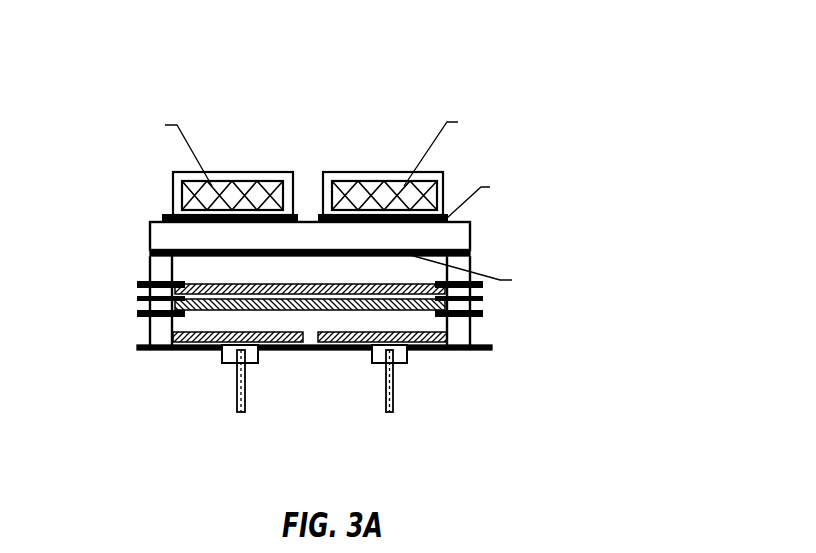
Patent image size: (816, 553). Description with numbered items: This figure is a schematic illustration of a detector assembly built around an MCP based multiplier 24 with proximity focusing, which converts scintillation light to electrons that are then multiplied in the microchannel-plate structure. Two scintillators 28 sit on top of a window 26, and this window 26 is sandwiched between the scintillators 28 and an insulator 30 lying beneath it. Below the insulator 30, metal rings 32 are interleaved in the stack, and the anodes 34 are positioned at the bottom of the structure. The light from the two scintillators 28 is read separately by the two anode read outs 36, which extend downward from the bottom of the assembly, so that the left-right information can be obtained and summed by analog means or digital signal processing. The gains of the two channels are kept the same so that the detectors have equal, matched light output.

The MCP based multiplier 24 is at (558, 67).
The window 26 is at (342, 231).
The scintillators 28 is at (308, 169).
The insulator 30 is at (290, 288).
The metal rings 32 is at (139, 291).
The anodes 34 is at (314, 373).
The anode read outs 36 is at (237, 383).